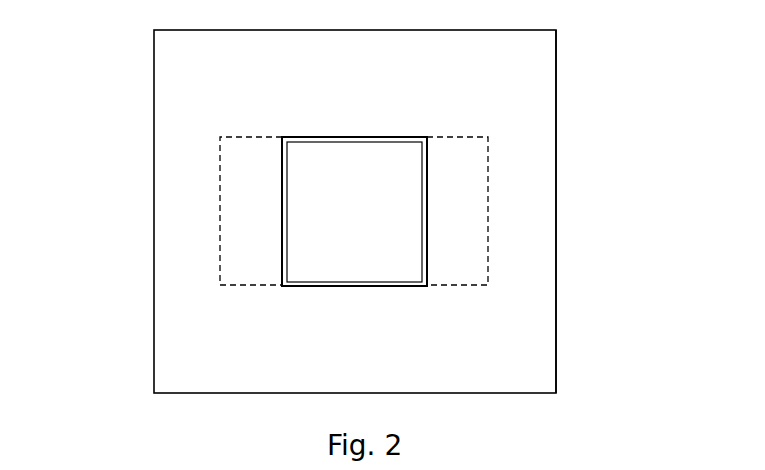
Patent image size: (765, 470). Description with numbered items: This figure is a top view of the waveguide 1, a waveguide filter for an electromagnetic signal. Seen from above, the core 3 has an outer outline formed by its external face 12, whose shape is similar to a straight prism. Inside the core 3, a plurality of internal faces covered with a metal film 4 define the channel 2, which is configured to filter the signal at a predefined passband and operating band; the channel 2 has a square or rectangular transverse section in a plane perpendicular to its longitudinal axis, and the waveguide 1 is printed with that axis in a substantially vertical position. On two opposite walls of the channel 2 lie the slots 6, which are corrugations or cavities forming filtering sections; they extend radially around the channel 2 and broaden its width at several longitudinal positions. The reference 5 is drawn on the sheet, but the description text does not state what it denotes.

The waveguide 1 is at (108, 373).
The channel 2 is at (365, 226).
The core 3 is at (528, 152).
The metal film 4 is at (429, 145).
The substrate / carrier 5 is at (153, 148).
The slots 6 is at (264, 226).
The external face 12 is at (557, 327).